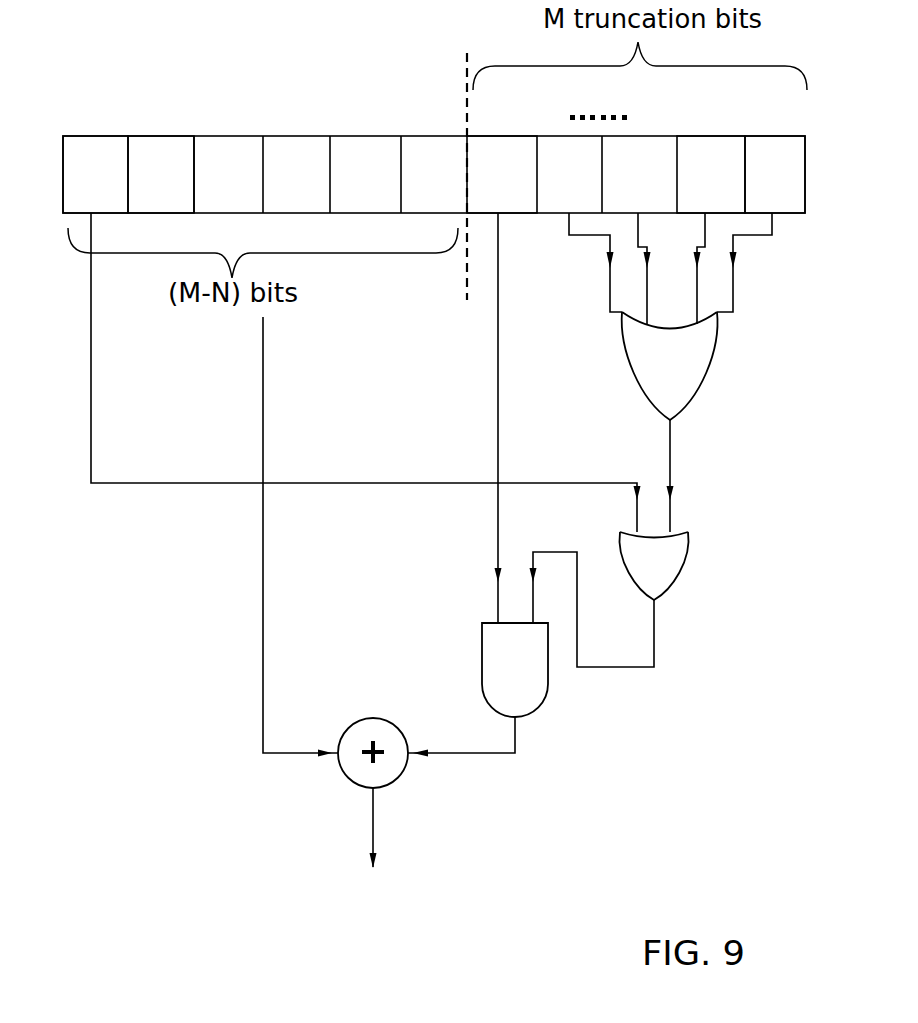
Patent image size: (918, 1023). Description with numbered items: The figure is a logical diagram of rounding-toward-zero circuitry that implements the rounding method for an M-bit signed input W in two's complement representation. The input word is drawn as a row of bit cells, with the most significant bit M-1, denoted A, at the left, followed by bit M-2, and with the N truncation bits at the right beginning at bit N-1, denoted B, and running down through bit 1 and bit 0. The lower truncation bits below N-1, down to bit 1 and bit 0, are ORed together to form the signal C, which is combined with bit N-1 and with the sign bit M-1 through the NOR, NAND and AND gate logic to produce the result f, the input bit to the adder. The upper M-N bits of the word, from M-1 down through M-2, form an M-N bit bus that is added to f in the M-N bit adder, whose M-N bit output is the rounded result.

The most significant bit position M-1 is at (350, 317).
The second most significant bit position M-2 is at (161, 158).
The most significant truncation bit position N-1 is at (502, 363).
The truncation bit one position bit 1 is at (711, 212).
The truncation bit zero position bit 0 is at (762, 206).
The (M-N) bit bus M-N is at (395, 800).